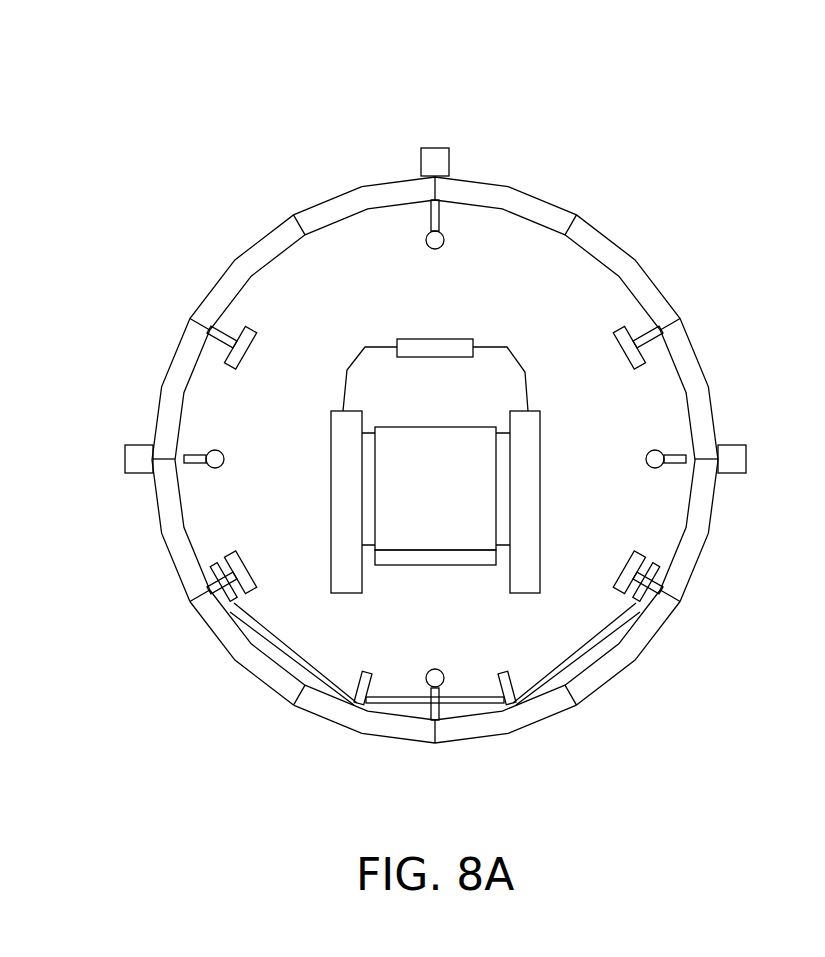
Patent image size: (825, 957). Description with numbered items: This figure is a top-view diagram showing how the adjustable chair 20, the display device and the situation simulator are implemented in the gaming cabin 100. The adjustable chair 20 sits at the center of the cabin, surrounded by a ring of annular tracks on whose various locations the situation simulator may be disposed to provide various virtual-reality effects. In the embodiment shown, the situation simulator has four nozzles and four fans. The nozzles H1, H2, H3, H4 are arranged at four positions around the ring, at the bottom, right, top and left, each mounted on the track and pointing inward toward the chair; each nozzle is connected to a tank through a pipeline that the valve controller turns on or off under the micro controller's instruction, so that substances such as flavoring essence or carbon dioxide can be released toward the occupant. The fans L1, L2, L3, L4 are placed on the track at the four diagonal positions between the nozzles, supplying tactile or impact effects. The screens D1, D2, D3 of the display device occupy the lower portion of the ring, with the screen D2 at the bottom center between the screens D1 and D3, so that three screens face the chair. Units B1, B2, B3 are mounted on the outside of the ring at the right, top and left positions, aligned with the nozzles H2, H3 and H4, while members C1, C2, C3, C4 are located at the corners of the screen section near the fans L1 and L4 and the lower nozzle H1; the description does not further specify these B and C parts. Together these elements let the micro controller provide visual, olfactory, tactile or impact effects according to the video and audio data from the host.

The gaming cabin 100 is at (604, 132).
The adjustable chair 20 is at (488, 365).
The first module B1 is at (746, 460).
The second module B2 is at (437, 147).
The third module B3 is at (135, 460).
The nozzle H1 is at (434, 668).
The nozzle H2 is at (646, 460).
The nozzle H3 is at (433, 248).
The nozzle H4 is at (225, 460).
The fan L1 is at (620, 572).
The fan L2 is at (622, 350).
The fan L3 is at (246, 348).
The fan L4 is at (250, 572).
The first connecting member C1 is at (618, 600).
The second connecting member C2 is at (506, 670).
The third connecting member C3 is at (368, 670).
The fourth connecting member C4 is at (255, 598).
The screen D1 is at (603, 634).
The screen D2 is at (407, 702).
The screen D3 is at (268, 638).